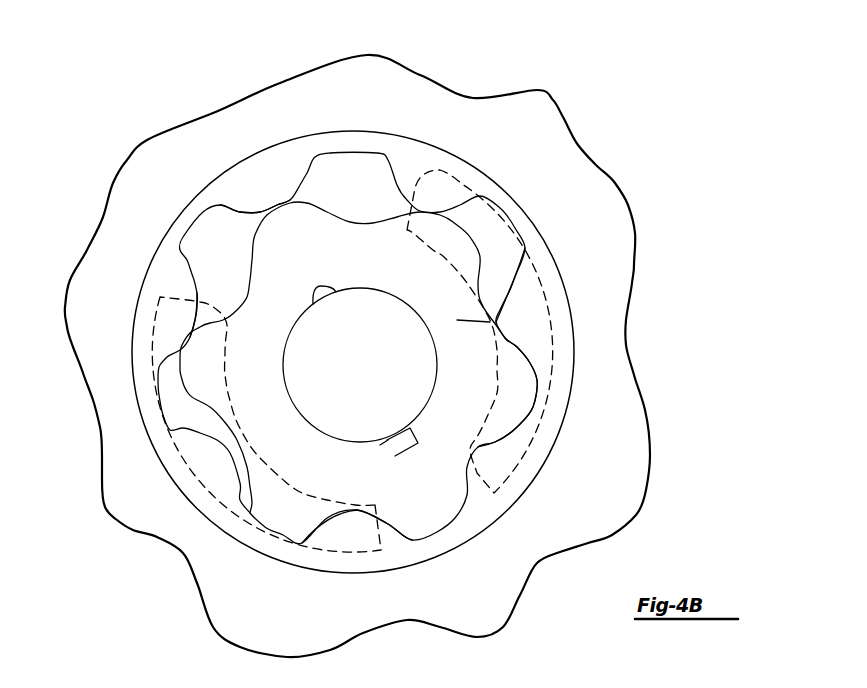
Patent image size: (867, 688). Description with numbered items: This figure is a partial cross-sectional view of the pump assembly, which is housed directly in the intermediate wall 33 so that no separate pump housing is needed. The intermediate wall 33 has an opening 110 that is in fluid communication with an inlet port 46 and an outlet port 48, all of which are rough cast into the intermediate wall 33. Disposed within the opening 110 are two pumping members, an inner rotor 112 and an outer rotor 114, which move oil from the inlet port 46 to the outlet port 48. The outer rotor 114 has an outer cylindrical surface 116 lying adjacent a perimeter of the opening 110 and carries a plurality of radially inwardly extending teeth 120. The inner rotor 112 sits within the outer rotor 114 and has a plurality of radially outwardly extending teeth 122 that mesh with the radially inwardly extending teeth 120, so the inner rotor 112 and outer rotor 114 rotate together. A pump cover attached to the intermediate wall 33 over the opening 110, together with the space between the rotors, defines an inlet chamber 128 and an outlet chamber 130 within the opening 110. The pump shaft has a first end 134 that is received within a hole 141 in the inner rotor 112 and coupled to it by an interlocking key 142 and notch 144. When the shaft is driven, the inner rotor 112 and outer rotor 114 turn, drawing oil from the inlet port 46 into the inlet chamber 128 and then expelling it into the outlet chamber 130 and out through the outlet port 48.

The intermediate wall 33 is at (260, 107).
The inlet port 46 is at (208, 308).
The outlet port 48 is at (545, 425).
The opening 110 is at (408, 140).
The inner rotor 112 is at (492, 322).
The outer rotor 114 is at (237, 183).
The outer cylindrical surface 116 is at (383, 573).
The radially inwardly extending teeth 120 is at (283, 180).
The radially outwardly extending teeth 122 is at (197, 353).
The inlet chamber 128 is at (206, 427).
The outlet chamber 130 is at (492, 258).
The first end 134 is at (368, 318).
The hole 141 is at (284, 372).
The interlocking key 142 is at (387, 447).
The notch 144 is at (397, 427).